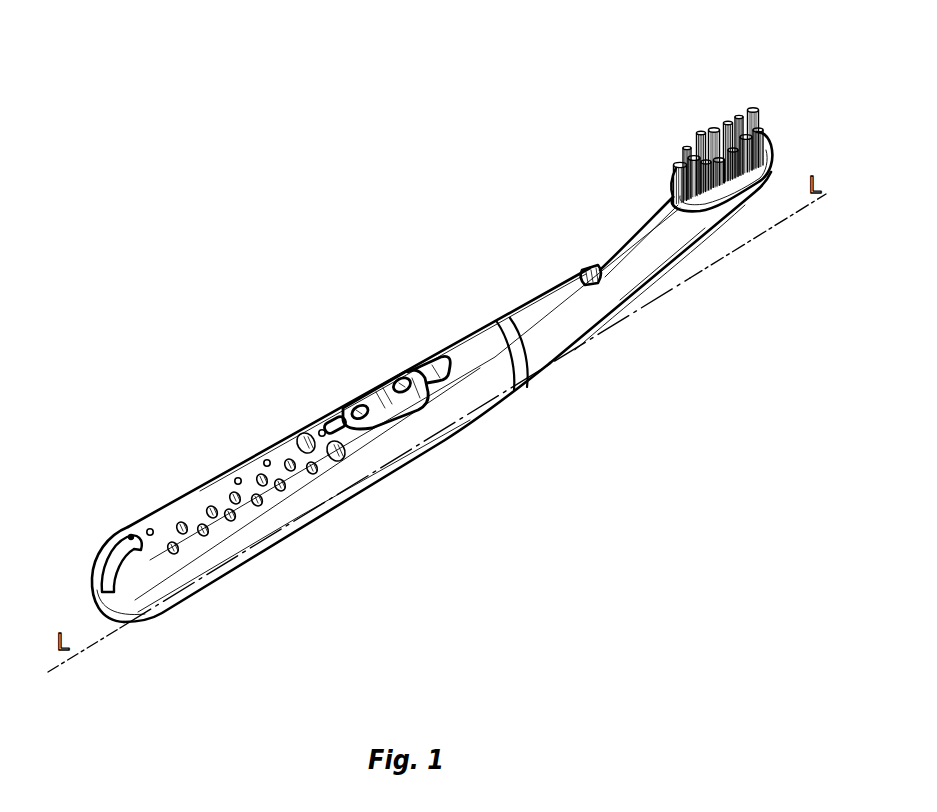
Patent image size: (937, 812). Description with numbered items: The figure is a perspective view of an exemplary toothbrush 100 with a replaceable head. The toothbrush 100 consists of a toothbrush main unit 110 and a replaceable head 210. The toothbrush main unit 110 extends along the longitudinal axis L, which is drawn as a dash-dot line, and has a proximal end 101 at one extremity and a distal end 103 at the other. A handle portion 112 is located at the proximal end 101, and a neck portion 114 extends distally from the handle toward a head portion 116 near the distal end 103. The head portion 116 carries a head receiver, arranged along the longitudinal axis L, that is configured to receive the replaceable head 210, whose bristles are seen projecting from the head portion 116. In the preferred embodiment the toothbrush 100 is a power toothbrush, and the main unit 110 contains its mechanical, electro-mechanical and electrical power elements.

The toothbrush 100 is at (448, 375).
The proximal end 101 is at (110, 618).
The distal end 103 is at (773, 140).
The toothbrush main unit 110 is at (386, 473).
The handle portion 112 is at (288, 547).
The neck portion 114 is at (590, 333).
The head portion 116 is at (737, 180).
The replaceable head 210 is at (672, 190).